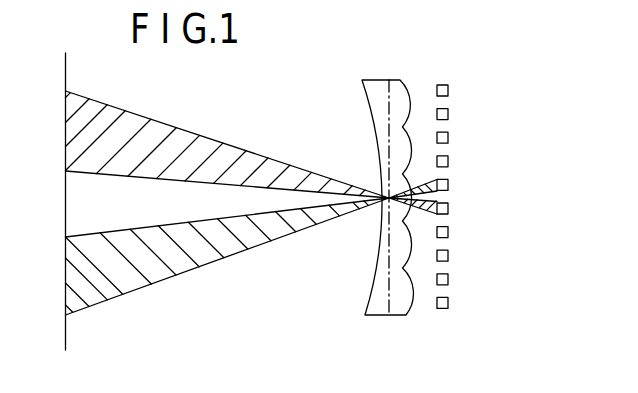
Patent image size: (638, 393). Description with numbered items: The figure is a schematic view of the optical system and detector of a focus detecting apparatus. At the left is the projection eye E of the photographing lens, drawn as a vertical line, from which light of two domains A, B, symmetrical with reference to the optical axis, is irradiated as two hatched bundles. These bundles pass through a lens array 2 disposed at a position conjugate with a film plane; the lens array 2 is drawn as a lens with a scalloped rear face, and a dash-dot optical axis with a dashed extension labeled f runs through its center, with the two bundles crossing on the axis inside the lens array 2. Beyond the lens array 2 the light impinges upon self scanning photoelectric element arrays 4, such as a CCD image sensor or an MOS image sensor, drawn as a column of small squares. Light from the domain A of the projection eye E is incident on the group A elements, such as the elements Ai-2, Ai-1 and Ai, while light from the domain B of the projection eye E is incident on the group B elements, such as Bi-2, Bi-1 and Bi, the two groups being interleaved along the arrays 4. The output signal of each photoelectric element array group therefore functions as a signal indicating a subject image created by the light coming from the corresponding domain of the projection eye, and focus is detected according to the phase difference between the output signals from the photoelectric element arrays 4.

The lens array 2 is at (360, 297).
The self scanning photoelectric element arrays 4 is at (475, 210).
The focal length / optical axis f is at (389, 315).
The projection eye E is at (65, 335).
The domain A is at (235, 248).
The domain B is at (234, 152).
The photoelectric element of group A Ai-2 is at (448, 87).
The photoelectric element of group B Bi-2 is at (448, 115).
The photoelectric element of group A Ai-1 is at (448, 137).
The photoelectric element of group B Bi-1 is at (448, 160).
The photoelectric element Ai of group A Ai is at (448, 185).
The photoelectric element Bi of group B Bi is at (448, 208).